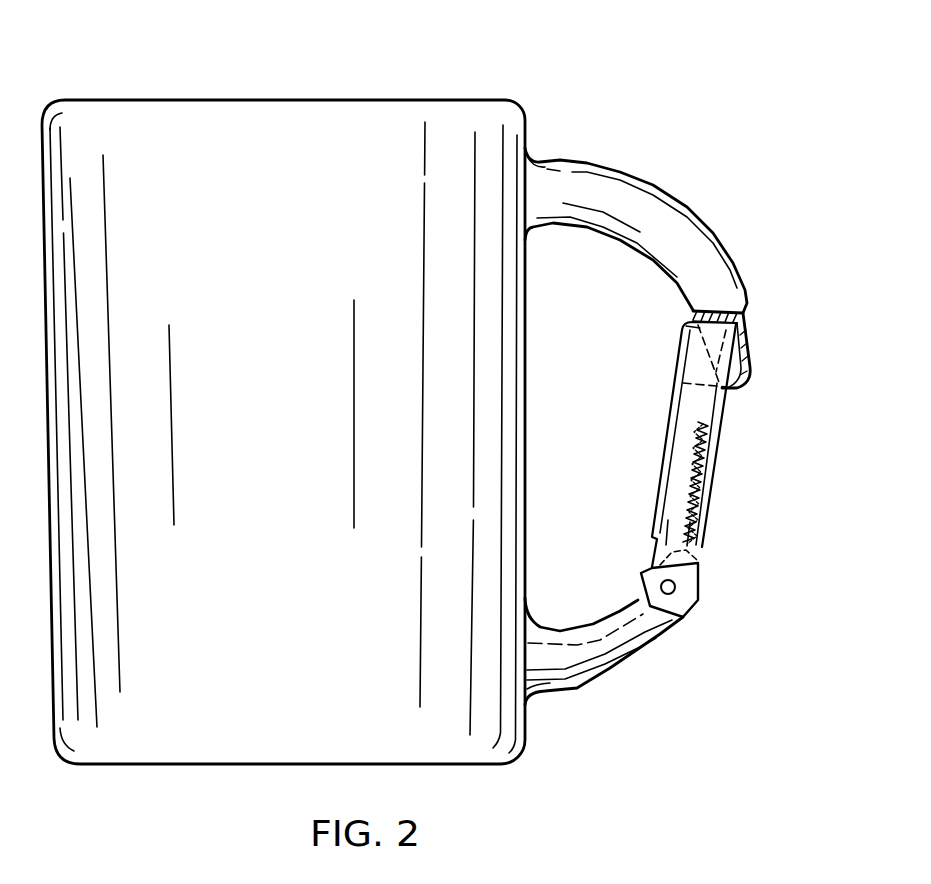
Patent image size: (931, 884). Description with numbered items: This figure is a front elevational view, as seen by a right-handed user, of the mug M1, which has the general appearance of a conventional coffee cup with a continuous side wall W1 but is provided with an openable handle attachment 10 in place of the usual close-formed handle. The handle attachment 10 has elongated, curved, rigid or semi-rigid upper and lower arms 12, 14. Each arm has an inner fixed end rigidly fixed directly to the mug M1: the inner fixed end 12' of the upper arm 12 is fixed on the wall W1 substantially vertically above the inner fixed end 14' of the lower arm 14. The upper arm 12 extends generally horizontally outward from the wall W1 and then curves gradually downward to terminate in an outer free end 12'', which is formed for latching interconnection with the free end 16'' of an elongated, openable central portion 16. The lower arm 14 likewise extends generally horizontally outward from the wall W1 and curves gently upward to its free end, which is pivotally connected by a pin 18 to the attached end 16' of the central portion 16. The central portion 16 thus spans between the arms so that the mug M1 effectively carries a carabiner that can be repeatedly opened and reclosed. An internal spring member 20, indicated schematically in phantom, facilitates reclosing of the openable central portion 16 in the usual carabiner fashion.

The handle attachment 10 is at (708, 190).
The upper arm 12 is at (636, 220).
The inner fixed end of upper arm 12' is at (580, 123).
The outer free end of upper arm 12'' is at (777, 350).
The lower arm 14 is at (604, 663).
The inner fixed end of lower arm 14' is at (652, 687).
The openable central portion 16 is at (667, 444).
The attached end of openable central portion 16' is at (730, 569).
The free end of openable central portion 16'' is at (653, 322).
The pin 18 is at (677, 587).
The internal spring member 20 is at (723, 452).
The mug M1 is at (234, 86).
The side wall W1 is at (258, 352).